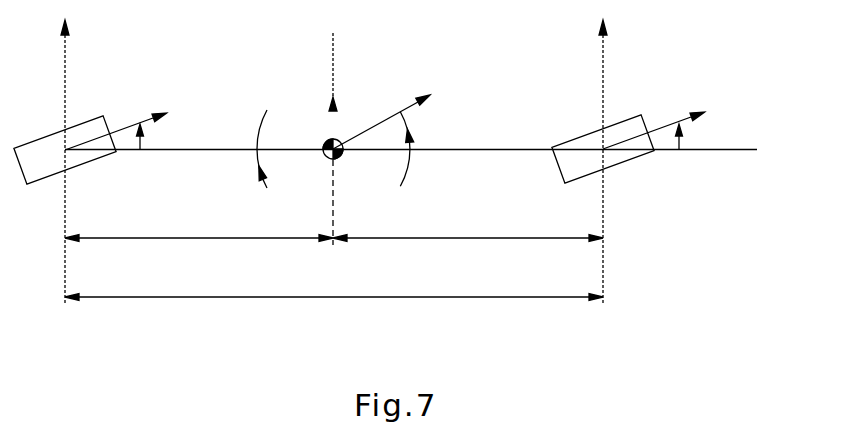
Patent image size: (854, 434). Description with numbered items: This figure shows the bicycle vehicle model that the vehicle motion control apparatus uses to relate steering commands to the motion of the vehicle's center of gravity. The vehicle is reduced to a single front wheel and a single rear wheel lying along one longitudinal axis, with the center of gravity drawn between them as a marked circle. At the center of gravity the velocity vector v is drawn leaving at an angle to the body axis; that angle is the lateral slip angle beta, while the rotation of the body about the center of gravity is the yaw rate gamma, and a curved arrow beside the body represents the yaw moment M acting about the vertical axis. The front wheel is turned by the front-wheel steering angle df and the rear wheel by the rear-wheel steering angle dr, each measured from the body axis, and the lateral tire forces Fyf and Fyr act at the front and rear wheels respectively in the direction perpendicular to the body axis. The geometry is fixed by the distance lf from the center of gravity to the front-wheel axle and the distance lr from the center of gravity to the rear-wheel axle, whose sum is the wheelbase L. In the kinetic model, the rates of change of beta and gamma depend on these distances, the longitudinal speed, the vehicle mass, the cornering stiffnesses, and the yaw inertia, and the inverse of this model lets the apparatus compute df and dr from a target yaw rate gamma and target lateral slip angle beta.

The rear lateral tire force Fyr is at (84, 161).
The front lateral tire force Fyf is at (621, 161).
The rear-wheel steering angle dr is at (127, 126).
The front-wheel steering angle df is at (665, 125).
The yaw moment M is at (255, 139).
The longitudinal speed v is at (384, 110).
The lateral slip angle beta is at (417, 149).
The yaw rate gamma is at (366, 182).
The distance from center of gravity to rear-wheel axle lr is at (199, 227).
The distance from center of gravity to front-wheel axle lf is at (468, 227).
The wheelbase L is at (334, 286).